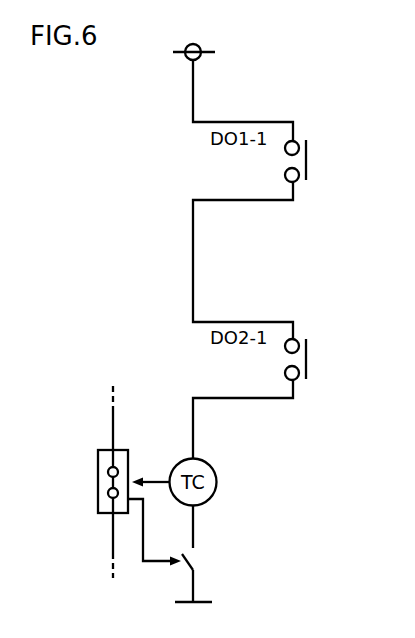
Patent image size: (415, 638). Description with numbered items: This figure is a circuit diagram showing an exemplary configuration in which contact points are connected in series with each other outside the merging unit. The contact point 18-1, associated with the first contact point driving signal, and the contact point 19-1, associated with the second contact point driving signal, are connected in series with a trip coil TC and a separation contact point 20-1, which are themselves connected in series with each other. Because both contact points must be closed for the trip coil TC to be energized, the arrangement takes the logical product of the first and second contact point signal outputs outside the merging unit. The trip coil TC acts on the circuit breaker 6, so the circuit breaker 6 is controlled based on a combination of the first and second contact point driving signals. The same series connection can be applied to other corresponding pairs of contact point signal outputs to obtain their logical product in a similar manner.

The contact point 18-1 is at (301, 134).
The contact point 19-1 is at (301, 334).
The separation contact point 20-1 is at (197, 561).
The circuit breaker 6 is at (98, 462).